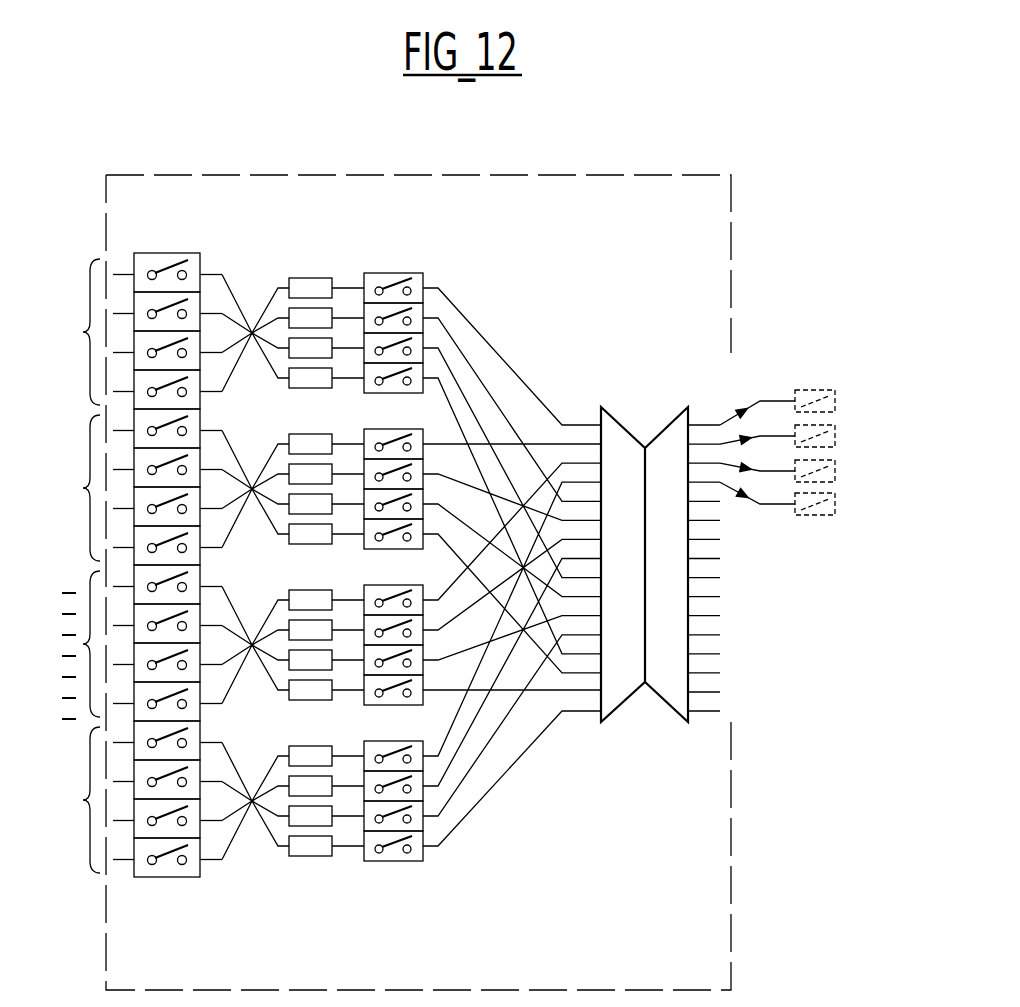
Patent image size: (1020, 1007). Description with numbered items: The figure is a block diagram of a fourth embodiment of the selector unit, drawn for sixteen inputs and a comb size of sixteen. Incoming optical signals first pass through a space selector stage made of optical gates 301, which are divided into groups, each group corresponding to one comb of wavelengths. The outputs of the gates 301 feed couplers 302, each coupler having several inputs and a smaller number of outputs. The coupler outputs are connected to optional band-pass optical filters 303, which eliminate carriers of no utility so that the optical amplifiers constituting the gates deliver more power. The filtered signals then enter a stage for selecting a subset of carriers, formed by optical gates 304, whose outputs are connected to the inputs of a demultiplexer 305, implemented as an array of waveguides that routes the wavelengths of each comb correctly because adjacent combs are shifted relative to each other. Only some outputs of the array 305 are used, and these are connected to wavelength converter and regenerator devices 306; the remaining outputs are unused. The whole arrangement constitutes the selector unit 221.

The switching matrix 221 is at (705, 175).
The optical gates 301 is at (172, 253).
The couplers 302 is at (252, 330).
The optical filters 303 is at (325, 278).
The optical gates 304 is at (405, 273).
The demultiplexer 305 is at (662, 425).
The wavelength converter and regenerator devices 306 is at (821, 390).